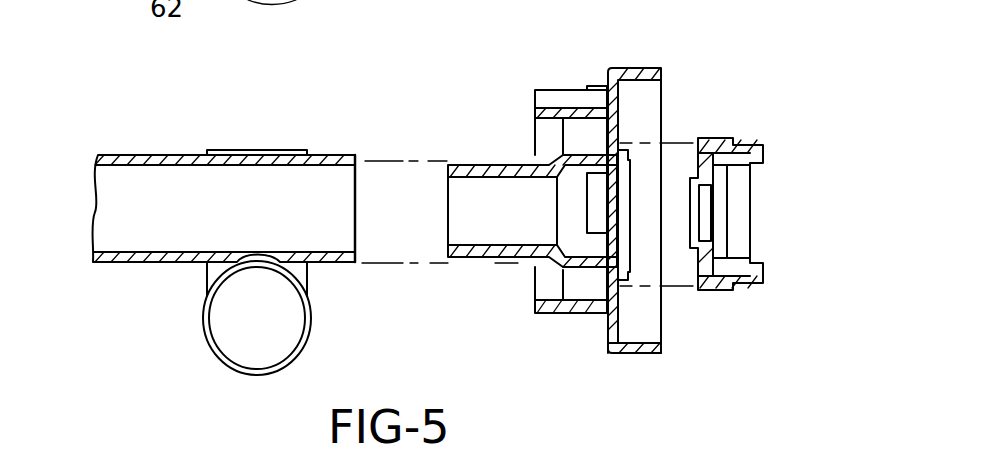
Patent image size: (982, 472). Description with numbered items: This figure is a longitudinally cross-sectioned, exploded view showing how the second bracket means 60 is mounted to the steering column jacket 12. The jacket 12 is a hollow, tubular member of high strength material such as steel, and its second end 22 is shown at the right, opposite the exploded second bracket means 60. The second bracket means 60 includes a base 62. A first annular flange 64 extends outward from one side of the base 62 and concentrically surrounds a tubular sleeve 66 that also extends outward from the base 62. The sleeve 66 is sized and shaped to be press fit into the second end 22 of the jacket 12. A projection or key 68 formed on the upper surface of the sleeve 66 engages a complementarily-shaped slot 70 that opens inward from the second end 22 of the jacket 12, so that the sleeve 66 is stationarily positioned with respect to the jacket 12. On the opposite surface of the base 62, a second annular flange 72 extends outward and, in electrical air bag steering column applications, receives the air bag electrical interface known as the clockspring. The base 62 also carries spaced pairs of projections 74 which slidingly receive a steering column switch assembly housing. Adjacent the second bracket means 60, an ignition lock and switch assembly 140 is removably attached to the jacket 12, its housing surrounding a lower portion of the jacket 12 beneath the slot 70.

The jacket 12 is at (135, 155).
The second end 22 is at (358, 266).
The second bracket means 60 is at (645, 21).
The base 62 is at (612, 100).
The first annular flange 64 is at (547, 112).
The tubular sleeve 66 is at (495, 265).
The key 68 is at (493, 158).
The slot 70 is at (313, 158).
The second annular flange 72 is at (632, 354).
The projections 74 is at (742, 294).
The ignition lock and switch assembly 140 is at (200, 307).